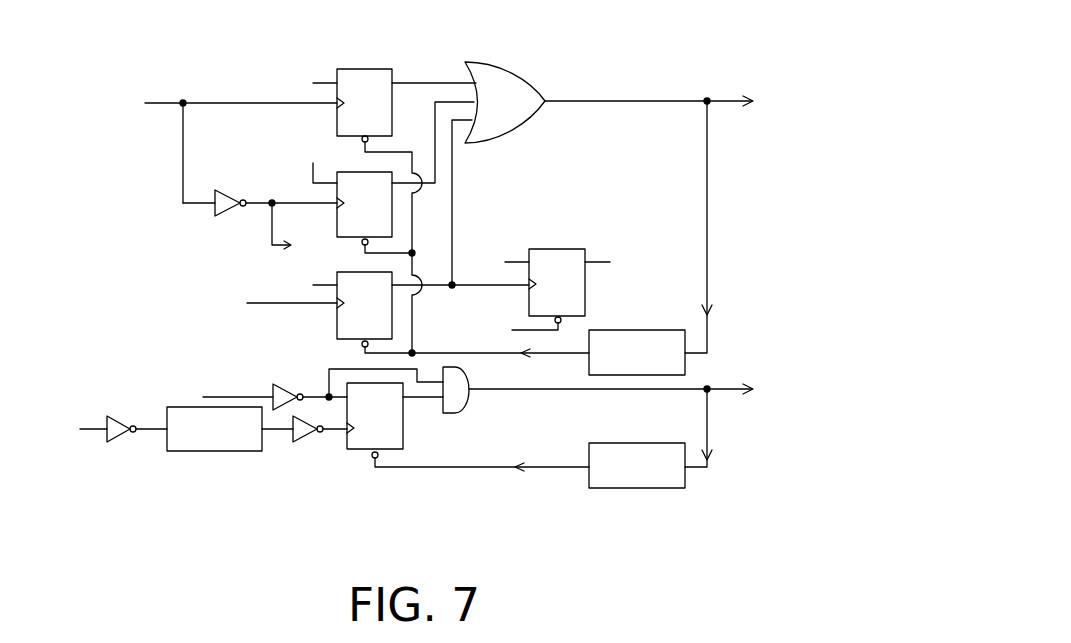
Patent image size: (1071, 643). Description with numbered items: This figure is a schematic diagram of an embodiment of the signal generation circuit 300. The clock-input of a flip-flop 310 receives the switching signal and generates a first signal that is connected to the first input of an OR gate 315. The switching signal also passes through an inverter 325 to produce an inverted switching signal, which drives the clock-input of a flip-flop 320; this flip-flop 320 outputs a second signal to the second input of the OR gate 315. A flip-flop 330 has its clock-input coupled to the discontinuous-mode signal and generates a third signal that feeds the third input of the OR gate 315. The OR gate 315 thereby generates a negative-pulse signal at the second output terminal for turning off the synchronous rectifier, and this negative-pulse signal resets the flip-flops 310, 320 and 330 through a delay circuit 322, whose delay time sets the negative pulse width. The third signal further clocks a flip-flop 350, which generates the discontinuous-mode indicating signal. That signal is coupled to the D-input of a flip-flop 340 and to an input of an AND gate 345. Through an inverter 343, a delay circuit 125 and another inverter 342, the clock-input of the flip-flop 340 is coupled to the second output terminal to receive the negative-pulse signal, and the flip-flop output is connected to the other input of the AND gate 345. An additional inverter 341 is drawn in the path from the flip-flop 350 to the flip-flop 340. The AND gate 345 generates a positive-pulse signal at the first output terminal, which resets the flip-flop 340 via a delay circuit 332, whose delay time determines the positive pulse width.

The signal generation circuit 300 is at (778, 53).
The flip-flop 310 is at (366, 72).
The OR gate 315 is at (518, 117).
The flip-flop 320 is at (357, 178).
The delay circuit 322 is at (637, 338).
The inverter 325 is at (223, 199).
The flip-flop 330 is at (334, 337).
The delay circuit 332 is at (665, 484).
The flip-flop 340 is at (396, 422).
The inverter 341 is at (274, 384).
The inverter 342 is at (113, 441).
The inverter 343 is at (303, 442).
The AND gate 345 is at (462, 398).
The flip-flop 350 is at (558, 258).
The delay circuit 125 is at (242, 450).